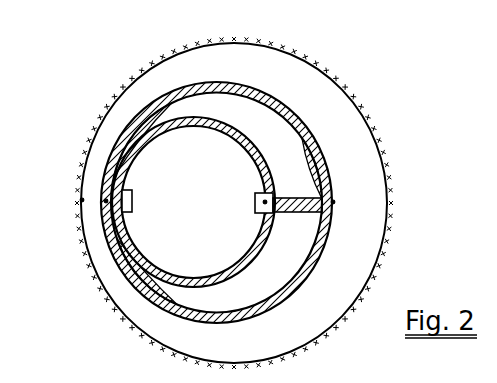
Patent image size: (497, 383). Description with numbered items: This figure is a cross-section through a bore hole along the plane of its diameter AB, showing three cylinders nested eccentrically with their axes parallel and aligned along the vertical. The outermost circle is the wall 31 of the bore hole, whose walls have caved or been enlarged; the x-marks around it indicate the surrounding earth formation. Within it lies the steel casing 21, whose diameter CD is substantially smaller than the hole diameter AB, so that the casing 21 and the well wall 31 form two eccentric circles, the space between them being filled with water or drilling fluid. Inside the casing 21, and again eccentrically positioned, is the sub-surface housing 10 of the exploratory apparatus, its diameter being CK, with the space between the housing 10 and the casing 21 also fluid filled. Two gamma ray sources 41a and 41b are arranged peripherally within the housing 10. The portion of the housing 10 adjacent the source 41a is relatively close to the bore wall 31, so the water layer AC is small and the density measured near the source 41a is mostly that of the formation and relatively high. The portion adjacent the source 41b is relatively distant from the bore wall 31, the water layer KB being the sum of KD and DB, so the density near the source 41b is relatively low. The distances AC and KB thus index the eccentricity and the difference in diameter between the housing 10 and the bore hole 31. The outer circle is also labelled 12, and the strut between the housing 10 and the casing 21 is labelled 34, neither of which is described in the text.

The outer pipe 12 is at (234, 189).
The wall of the bore hole 31 is at (257, 203).
The steel casing 21 is at (243, 191).
The sub-surface housing 10 is at (167, 218).
The gamma ray source 41a is at (76, 184).
The gamma ray source 41b is at (310, 223).
The strut rod 34 is at (309, 168).
The point A is at (66, 207).
The point B is at (412, 194).
The point C is at (77, 227).
The point D is at (344, 193).
The point K is at (280, 181).